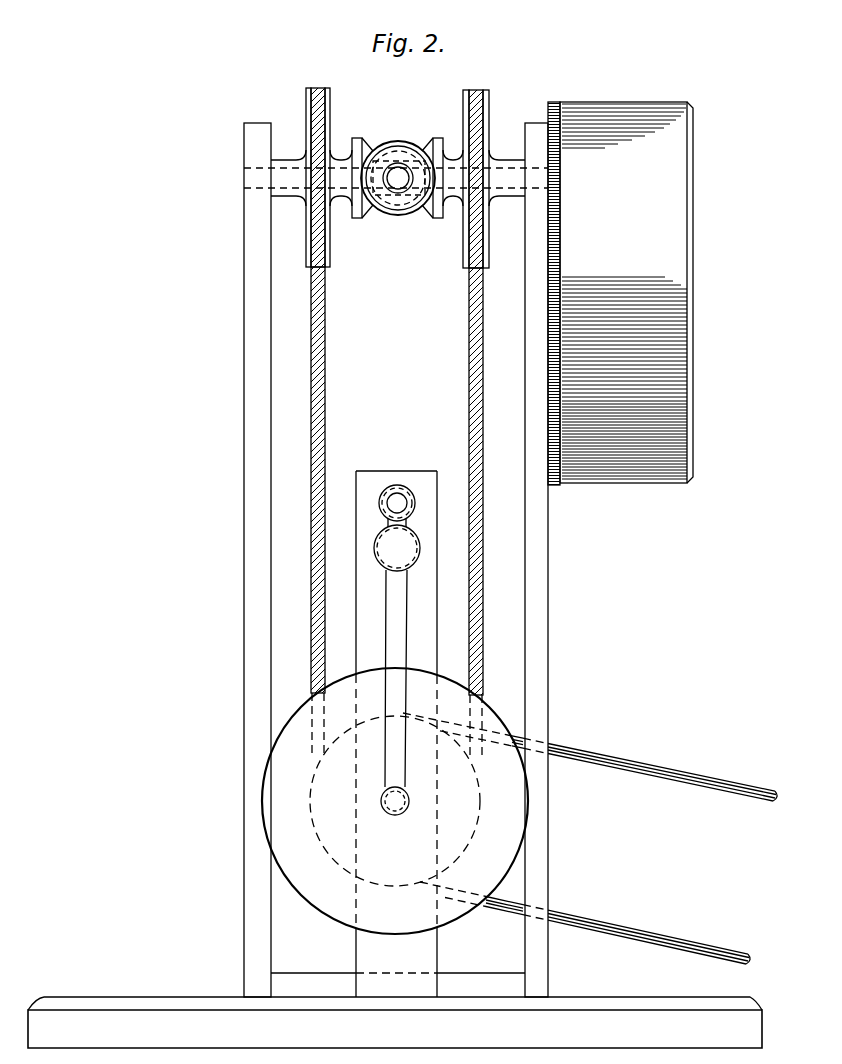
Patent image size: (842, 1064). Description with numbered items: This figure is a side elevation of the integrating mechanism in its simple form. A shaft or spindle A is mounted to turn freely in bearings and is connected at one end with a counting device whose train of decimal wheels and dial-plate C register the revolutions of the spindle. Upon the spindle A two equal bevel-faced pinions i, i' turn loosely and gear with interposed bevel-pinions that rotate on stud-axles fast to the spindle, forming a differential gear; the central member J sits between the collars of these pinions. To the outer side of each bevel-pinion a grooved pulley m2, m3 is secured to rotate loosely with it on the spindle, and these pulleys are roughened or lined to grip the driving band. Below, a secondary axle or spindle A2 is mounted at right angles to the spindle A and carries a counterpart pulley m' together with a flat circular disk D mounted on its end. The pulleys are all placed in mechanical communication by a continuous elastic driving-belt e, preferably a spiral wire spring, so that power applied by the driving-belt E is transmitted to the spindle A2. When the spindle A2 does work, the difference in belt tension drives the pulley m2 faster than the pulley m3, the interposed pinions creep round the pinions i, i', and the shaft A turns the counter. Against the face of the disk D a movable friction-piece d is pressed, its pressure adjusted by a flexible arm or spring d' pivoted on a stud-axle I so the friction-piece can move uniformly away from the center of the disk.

The shaft or spindle A is at (245, 175).
The secondary axle or spindle A2 is at (410, 797).
The dial-plate C is at (620, 293).
The flat circular disk D is at (395, 801).
The movable friction-piece d is at (389, 812).
The flexible arm or spring d' is at (397, 653).
The belt E is at (590, 838).
The continuous driving-belt e is at (402, 512).
The stud-axle I is at (398, 500).
The bevel-faced pinion i is at (432, 168).
The bevel-faced pinion i' is at (362, 167).
The wheel J is at (398, 191).
The pulley or grooved wheel m' is at (380, 829).
The grooved pulley m2 is at (479, 163).
The grooved pulley m3 is at (317, 164).